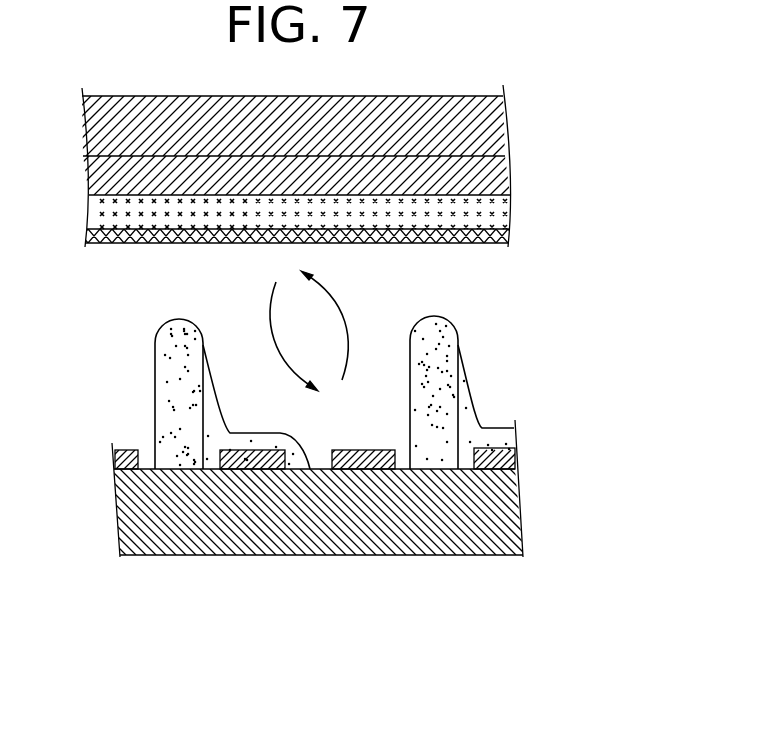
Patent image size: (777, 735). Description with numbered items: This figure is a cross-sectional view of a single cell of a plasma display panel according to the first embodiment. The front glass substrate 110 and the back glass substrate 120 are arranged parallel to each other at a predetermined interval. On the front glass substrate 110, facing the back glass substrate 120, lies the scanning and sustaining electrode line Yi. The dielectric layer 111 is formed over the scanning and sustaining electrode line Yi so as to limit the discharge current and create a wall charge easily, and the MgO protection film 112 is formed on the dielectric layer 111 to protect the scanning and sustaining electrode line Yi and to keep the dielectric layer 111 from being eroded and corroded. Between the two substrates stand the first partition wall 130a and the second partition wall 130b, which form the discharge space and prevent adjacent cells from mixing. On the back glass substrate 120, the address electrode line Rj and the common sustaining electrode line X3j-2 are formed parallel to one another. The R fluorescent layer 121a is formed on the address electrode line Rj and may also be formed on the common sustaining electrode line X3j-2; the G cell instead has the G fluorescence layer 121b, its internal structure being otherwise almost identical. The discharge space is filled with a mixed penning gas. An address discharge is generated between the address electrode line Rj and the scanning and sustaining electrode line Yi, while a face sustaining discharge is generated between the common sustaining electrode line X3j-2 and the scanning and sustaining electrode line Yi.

The front glass substrate 110 is at (482, 128).
The scanning and sustaining electrode line Yi is at (490, 168).
The dielectric layer 111 is at (500, 205).
The MgO protection film 112 is at (510, 233).
The back glass substrate 120 is at (505, 512).
The first partition wall 130a is at (177, 405).
The second partition wall 130b is at (440, 333).
The R fluorescent layer 121a is at (212, 398).
The G fluorescence layer 121b is at (468, 428).
The address electrode line Rj is at (252, 460).
The common sustaining electrode line X3j-2 is at (363, 463).